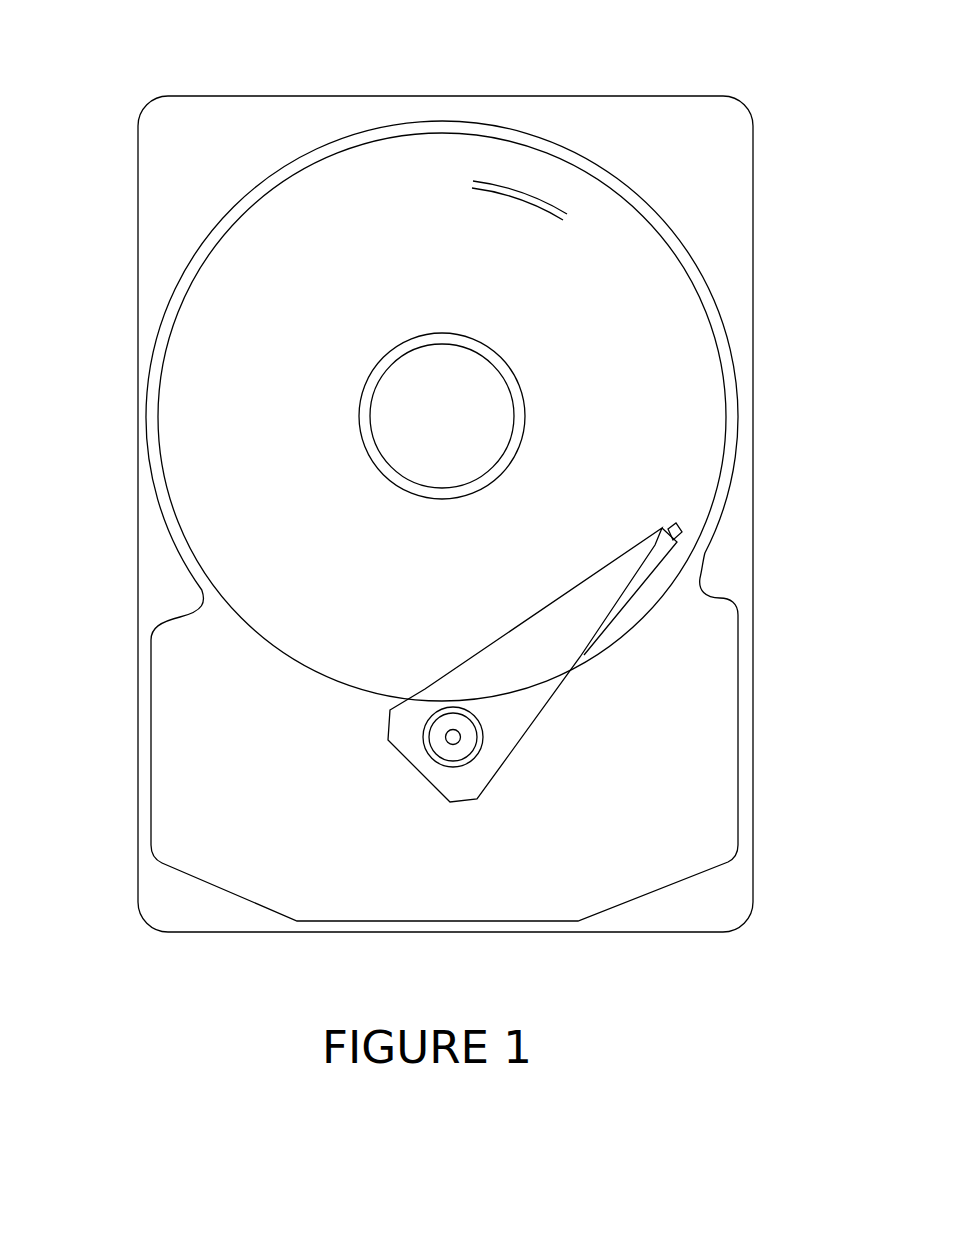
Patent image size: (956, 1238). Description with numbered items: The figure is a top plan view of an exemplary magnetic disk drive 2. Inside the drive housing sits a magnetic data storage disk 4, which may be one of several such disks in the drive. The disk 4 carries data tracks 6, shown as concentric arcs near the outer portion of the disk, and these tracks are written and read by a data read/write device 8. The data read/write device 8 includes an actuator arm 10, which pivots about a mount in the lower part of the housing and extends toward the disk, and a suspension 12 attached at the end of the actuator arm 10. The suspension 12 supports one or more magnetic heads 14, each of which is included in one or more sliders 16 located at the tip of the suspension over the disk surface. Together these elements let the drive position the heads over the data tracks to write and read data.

The magnetic disk drive 2 is at (108, 162).
The magnetic data storage disk 4 is at (333, 207).
The data track 6 is at (493, 180).
The data read/write device 8 is at (623, 640).
The actuator arm 10 is at (517, 682).
The suspension 12 is at (653, 548).
The magnetic head 14 is at (763, 509).
The slider 16 is at (678, 530).